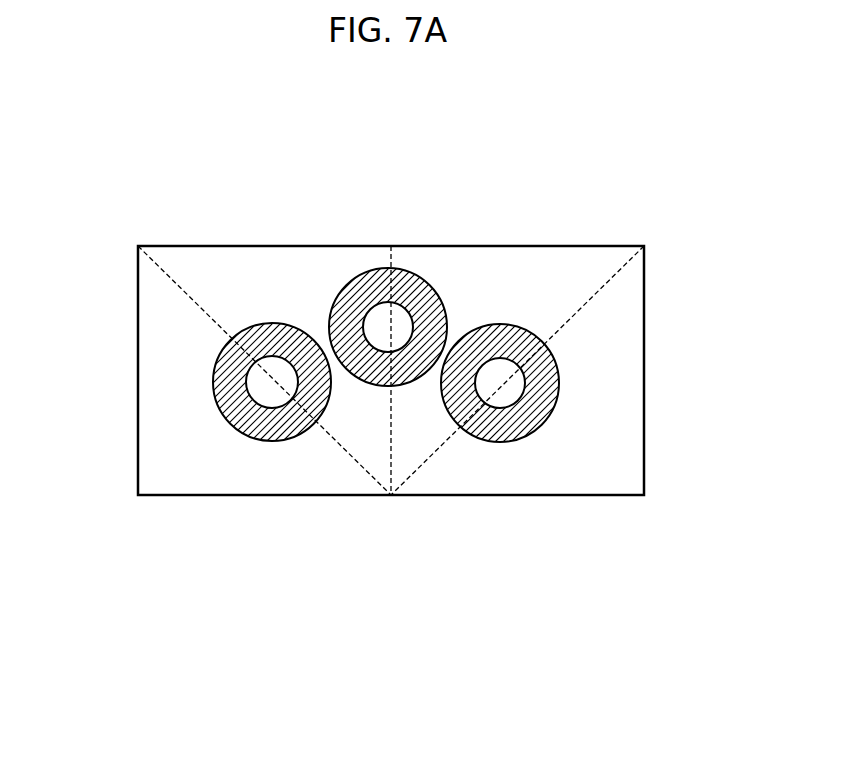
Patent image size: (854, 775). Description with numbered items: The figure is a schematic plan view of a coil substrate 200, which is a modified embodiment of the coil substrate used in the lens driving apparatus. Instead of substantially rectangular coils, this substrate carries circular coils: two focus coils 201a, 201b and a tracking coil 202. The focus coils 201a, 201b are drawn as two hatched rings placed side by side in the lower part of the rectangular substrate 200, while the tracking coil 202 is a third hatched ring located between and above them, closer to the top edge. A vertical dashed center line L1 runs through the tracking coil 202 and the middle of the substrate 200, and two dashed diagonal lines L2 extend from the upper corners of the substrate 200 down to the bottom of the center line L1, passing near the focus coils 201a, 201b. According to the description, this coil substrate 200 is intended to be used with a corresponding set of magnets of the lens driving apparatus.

The coil substrate 200 is at (359, 212).
The focus coil 201a is at (270, 441).
The focus coil 201b is at (510, 441).
The tracking coil 202 is at (334, 302).
The center line L1 is at (389, 257).
The diagonal line L2 is at (155, 263).